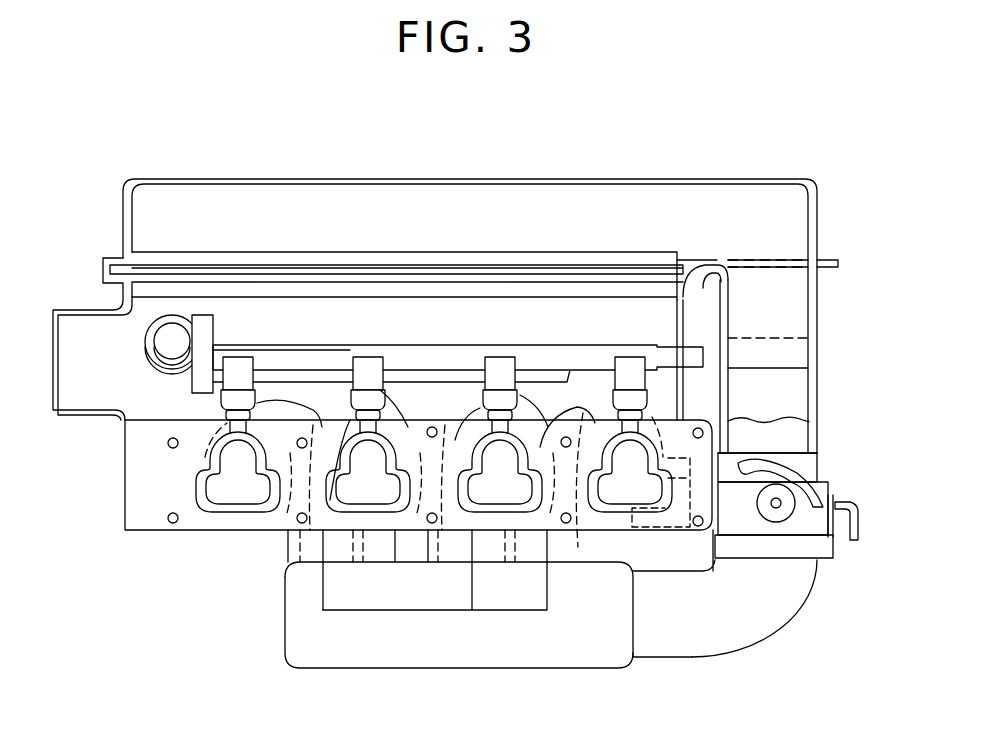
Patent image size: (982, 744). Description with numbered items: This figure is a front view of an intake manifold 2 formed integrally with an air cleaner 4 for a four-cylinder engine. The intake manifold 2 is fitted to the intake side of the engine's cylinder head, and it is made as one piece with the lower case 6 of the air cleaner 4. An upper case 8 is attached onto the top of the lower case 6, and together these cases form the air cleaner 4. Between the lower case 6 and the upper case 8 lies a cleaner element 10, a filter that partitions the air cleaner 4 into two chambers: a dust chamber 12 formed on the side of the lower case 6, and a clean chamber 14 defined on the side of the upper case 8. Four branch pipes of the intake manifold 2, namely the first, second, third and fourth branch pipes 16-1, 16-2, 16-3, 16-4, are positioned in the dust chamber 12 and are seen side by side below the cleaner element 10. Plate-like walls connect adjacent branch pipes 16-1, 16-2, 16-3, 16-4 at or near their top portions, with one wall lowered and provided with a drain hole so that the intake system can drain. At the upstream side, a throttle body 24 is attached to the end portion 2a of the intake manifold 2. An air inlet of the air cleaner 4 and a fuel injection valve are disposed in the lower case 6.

The intake manifold 2 is at (286, 602).
The end portion 2a is at (630, 660).
The air cleaner 4 is at (666, 180).
The lower case 6 is at (122, 298).
The upper case 8 is at (425, 180).
The cleaner element 10 is at (580, 275).
The dust chamber 12 is at (500, 318).
The clean chamber 14 is at (298, 200).
The first branch pipe 16-1 is at (287, 413).
The second branch pipe 16-2 is at (393, 413).
The third branch pipe 16-3 is at (462, 415).
The fourth branch pipe 16-4 is at (583, 413).
The throttle body 24 is at (798, 492).